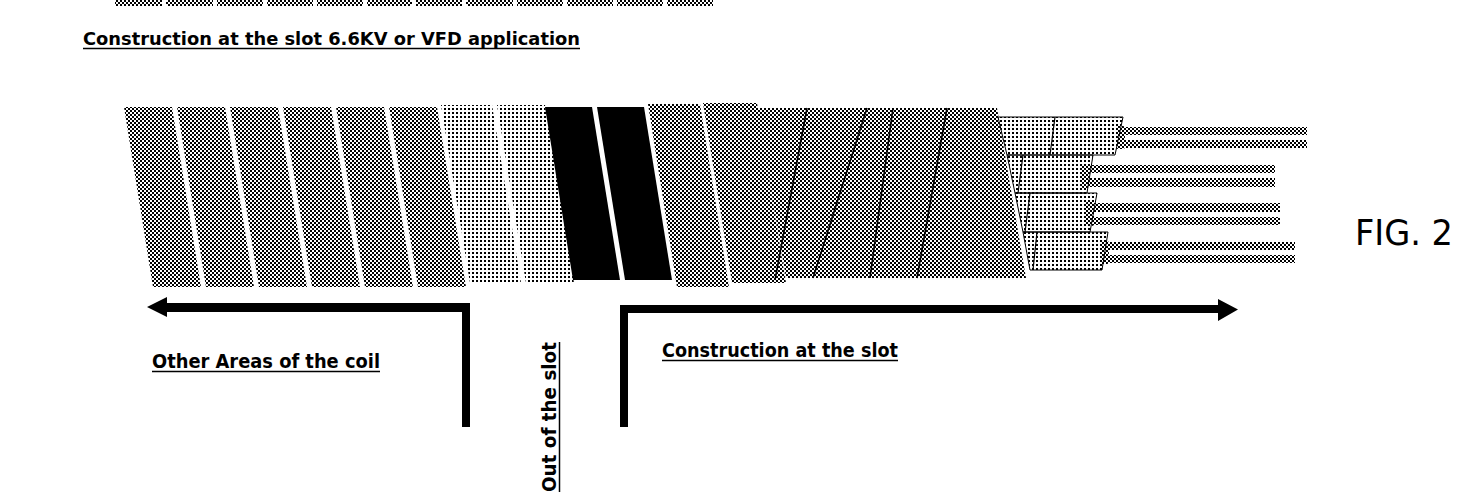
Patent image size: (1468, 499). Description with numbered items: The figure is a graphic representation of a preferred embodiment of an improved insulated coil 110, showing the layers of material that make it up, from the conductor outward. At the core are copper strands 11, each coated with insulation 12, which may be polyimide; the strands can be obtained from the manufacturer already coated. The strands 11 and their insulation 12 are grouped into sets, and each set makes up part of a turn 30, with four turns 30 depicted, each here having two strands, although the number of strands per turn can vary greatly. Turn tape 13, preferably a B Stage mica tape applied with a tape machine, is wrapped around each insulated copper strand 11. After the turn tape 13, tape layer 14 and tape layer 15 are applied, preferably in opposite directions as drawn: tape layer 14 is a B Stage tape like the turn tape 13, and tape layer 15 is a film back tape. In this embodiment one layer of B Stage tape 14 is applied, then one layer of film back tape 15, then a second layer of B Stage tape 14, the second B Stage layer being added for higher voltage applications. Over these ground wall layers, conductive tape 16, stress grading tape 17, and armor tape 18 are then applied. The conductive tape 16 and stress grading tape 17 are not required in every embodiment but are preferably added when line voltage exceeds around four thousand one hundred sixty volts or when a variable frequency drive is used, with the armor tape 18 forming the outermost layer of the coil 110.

The copper strands 11 is at (1197, 188).
The insulation 12 is at (1155, 90).
The turn tape 13 is at (1040, 112).
The tape layer 14 is at (678, 101).
The tape layer 15 is at (807, 106).
The conductive tape 16 is at (582, 102).
The stress grading tape 17 is at (500, 183).
The armor tape 18 is at (295, 188).
The turn 30 is at (1080, 0).
The improved insulated coil 110 is at (774, 234).